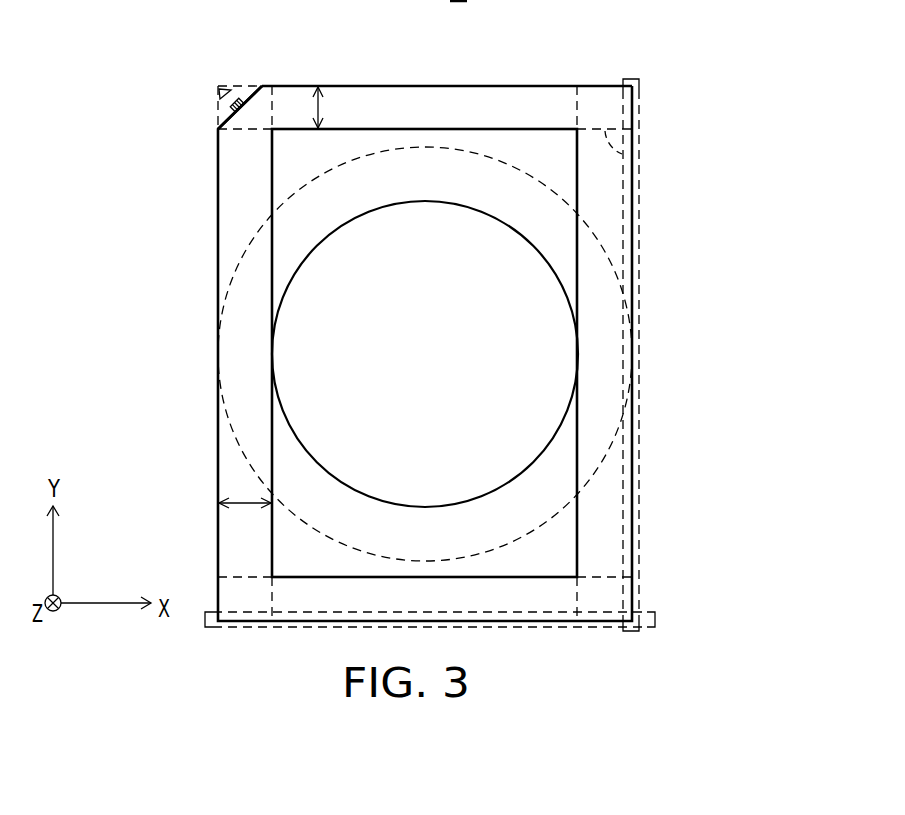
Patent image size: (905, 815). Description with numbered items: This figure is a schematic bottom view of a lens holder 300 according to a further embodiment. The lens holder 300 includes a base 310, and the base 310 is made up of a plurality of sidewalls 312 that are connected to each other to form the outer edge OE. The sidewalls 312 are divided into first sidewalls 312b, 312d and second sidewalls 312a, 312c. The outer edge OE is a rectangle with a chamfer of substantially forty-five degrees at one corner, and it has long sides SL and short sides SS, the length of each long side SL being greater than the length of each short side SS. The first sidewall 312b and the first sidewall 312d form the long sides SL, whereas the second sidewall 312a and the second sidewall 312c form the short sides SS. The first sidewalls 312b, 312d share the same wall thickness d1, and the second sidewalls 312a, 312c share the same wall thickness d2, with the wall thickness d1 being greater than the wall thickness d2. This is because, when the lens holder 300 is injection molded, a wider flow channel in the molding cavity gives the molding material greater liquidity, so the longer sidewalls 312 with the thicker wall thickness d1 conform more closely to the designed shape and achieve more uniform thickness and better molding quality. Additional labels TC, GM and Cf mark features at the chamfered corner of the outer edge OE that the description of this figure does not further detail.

The lens holder 300 is at (714, 666).
The base 310 is at (611, 64).
The sidewalls 312 is at (421, 338).
The second sidewall 312a is at (353, 598).
The first sidewall 312b is at (238, 241).
The second sidewall 312c is at (422, 108).
The first sidewall 312d is at (605, 226).
The outer edge OE is at (498, 84).
The truncated corner TC is at (213, 106).
The gate mark GM is at (226, 92).
The chamfer Cf is at (248, 87).
The long side SL is at (640, 470).
The short side SS is at (577, 629).
The wall thickness d1 is at (245, 489).
The wall thickness d2 is at (331, 107).